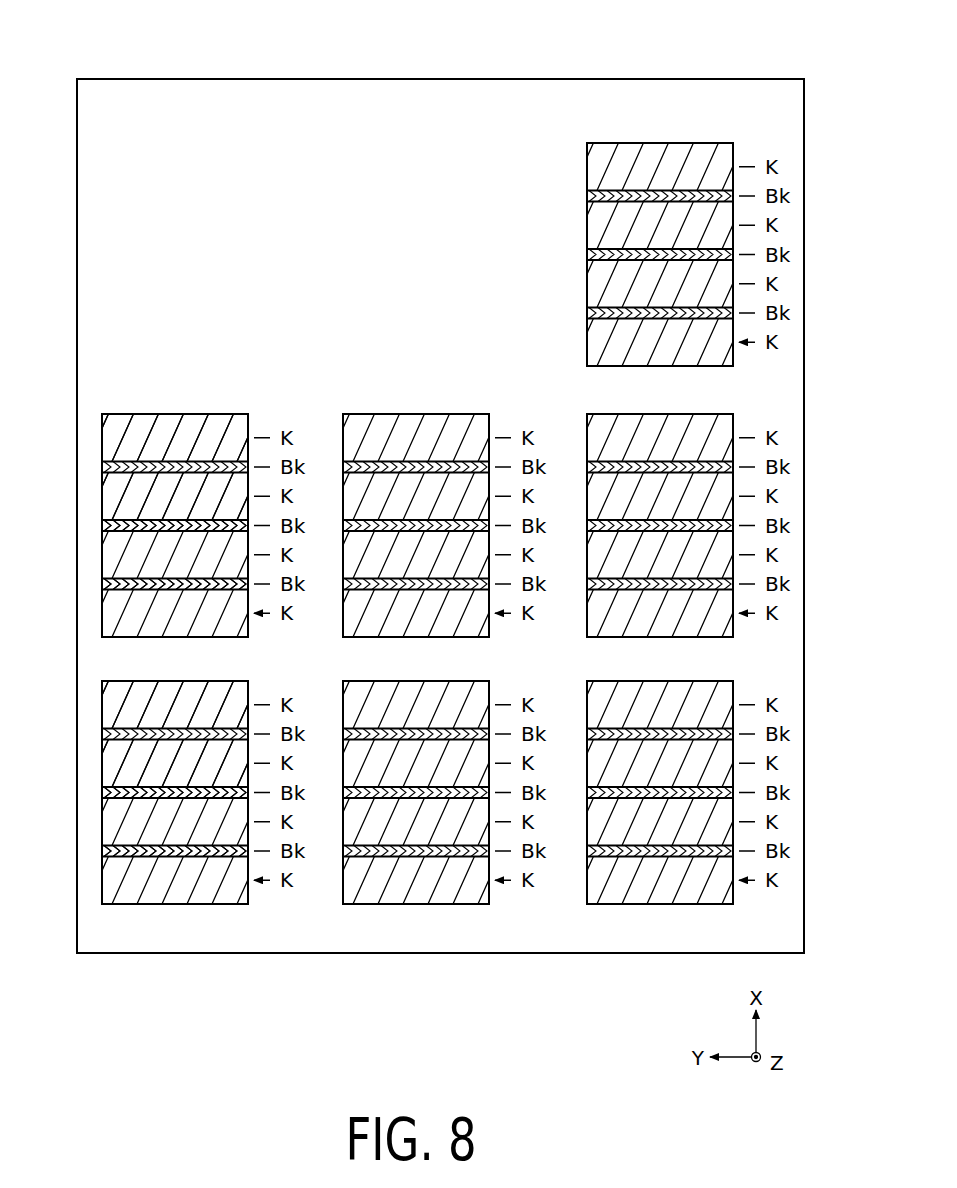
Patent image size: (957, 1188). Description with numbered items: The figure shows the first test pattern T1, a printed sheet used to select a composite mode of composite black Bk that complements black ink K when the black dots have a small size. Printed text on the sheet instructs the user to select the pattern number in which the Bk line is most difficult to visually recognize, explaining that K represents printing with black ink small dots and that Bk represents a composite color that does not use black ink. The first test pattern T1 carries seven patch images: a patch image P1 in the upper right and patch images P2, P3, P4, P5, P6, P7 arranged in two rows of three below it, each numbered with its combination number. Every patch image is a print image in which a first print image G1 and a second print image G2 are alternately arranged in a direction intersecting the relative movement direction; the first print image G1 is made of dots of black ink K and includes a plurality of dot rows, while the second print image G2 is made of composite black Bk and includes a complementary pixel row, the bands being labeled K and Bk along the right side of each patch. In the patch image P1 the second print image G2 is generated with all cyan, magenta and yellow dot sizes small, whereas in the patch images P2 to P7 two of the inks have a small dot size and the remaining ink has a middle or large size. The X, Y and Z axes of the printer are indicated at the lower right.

The first test pattern T1 is at (91, 56).
The patch image P1 is at (728, 133).
The patch image P2 is at (107, 401).
The patch image P3 is at (350, 402).
The patch image P4 is at (595, 402).
The patch image P5 is at (172, 942).
The patch image P6 is at (415, 942).
The patch image P7 is at (658, 944).
The first print image G1 is at (113, 495).
The second print image G2 is at (115, 581).